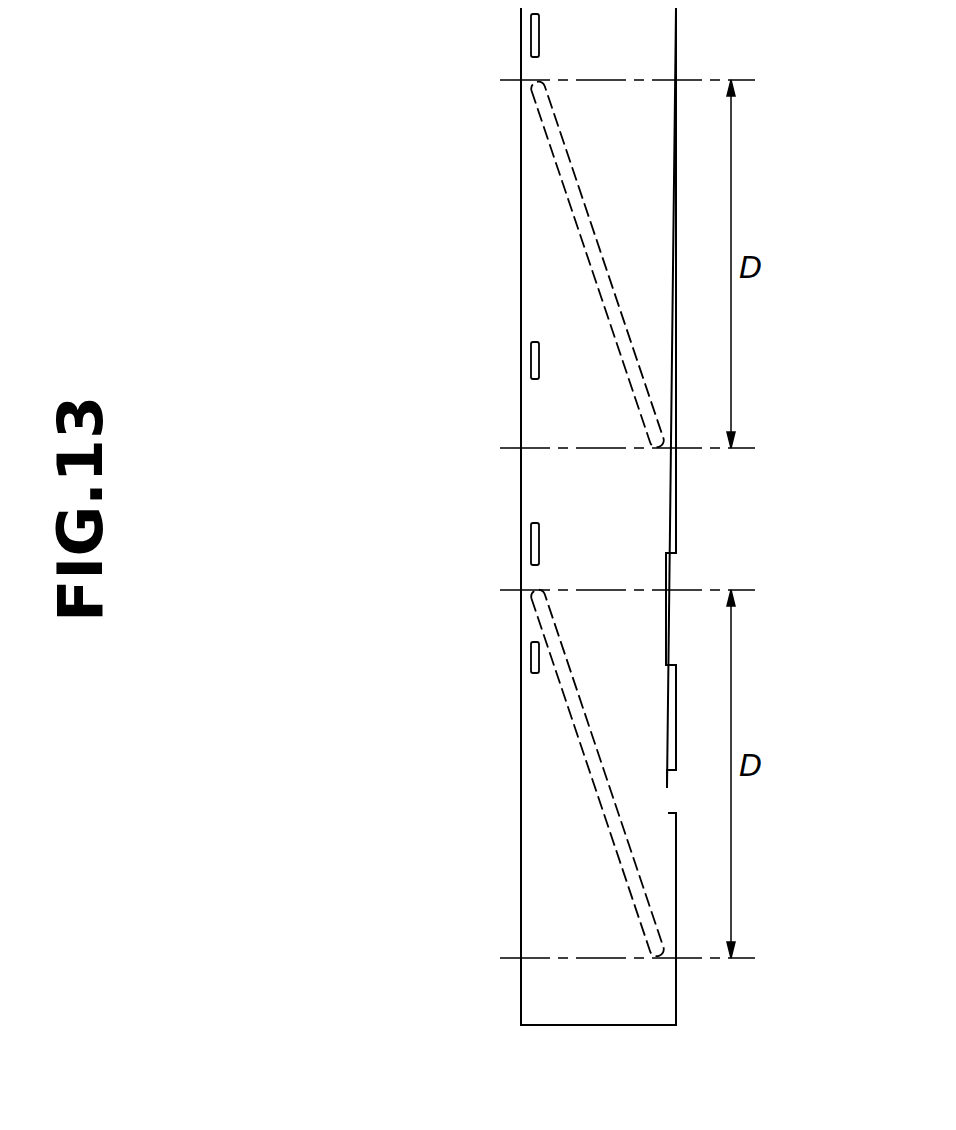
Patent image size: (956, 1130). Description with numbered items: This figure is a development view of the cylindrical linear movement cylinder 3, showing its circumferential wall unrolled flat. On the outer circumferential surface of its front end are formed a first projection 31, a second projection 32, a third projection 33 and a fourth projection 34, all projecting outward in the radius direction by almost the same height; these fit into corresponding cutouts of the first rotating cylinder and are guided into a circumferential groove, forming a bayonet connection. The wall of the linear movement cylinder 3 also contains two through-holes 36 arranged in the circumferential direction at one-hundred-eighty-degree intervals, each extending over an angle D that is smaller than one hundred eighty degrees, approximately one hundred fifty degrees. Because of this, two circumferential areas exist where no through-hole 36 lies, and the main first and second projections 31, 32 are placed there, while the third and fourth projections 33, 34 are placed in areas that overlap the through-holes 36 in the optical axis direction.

The linear movement cylinder 3 is at (543, 888).
The first projection 31 is at (532, 540).
The second projection 32 is at (532, 42).
The third projection 33 is at (532, 362).
The fourth projection 34 is at (530, 660).
The through-hole 36 is at (578, 697).